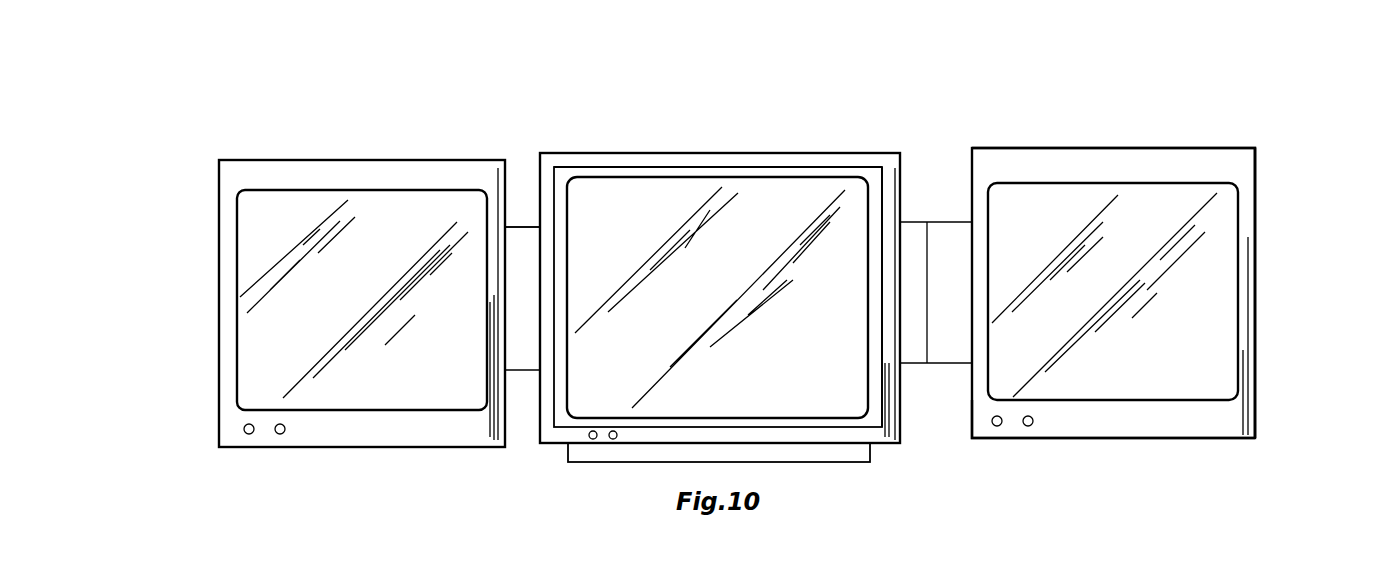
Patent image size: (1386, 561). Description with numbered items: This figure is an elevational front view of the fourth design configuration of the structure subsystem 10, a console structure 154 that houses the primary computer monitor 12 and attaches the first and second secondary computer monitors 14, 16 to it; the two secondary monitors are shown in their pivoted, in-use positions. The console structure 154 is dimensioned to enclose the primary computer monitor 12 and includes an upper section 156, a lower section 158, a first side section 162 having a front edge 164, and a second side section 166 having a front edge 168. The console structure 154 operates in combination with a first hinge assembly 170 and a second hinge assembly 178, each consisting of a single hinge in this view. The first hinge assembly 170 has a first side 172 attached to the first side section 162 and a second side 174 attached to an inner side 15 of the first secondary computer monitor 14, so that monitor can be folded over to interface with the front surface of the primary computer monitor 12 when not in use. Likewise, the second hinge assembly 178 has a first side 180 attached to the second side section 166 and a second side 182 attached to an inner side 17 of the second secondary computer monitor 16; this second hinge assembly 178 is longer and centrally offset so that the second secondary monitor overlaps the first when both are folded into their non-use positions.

The display system 10 is at (782, 261).
The console structure 154 is at (1188, 48).
The primary computer monitor 12 is at (748, 274).
The first secondary computer monitor 14 is at (362, 303).
The second secondary computer monitor 16 is at (1159, 270).
The inner side of the first secondary computer monitor 15 is at (505, 418).
The inner side of the second secondary computer monitor 17 is at (975, 410).
The upper section 156 is at (728, 159).
The lower section 158 is at (582, 456).
The first side section 162 is at (540, 177).
The front edge 164 is at (543, 237).
The second side section 166 is at (890, 205).
The front edge 168 is at (928, 270).
The first hinge assembly 170 is at (505, 228).
The first side 172 is at (563, 230).
The second side 174 is at (508, 273).
The second hinge assembly 178 is at (975, 284).
The first side 180 is at (975, 284).
The second side 182 is at (1257, 148).